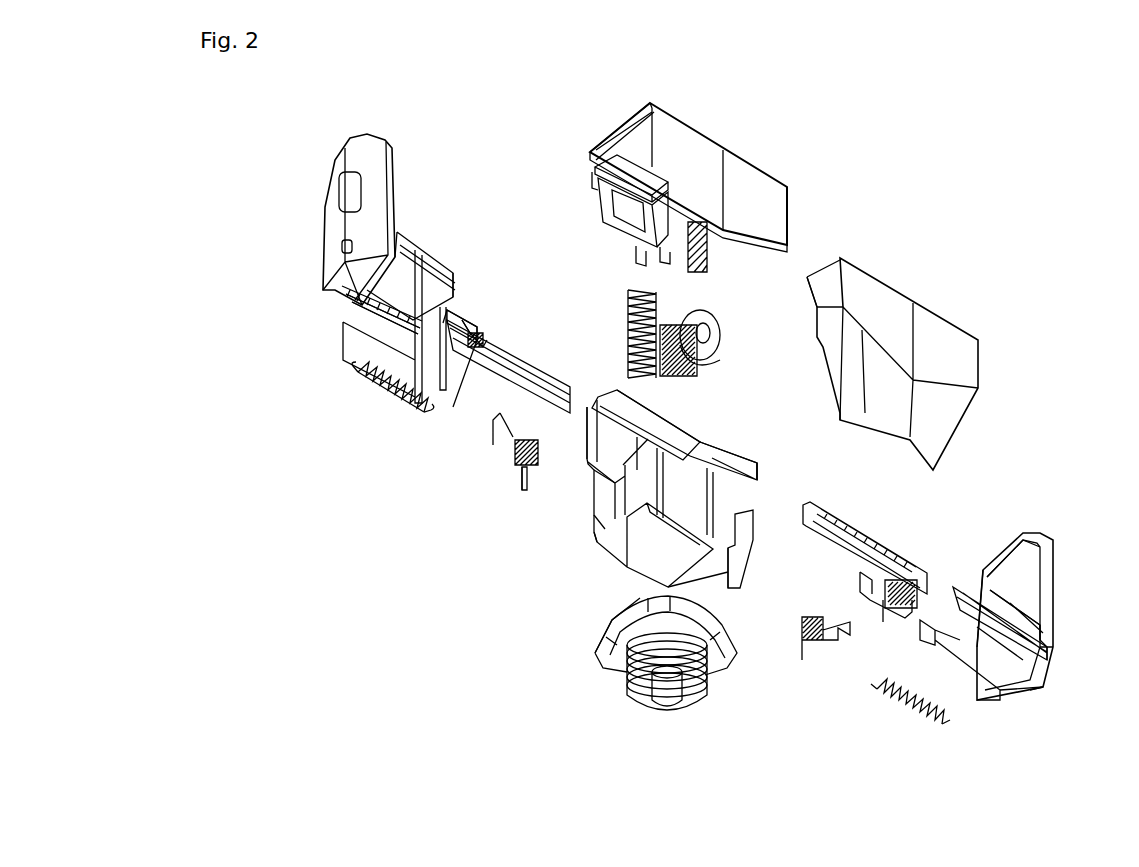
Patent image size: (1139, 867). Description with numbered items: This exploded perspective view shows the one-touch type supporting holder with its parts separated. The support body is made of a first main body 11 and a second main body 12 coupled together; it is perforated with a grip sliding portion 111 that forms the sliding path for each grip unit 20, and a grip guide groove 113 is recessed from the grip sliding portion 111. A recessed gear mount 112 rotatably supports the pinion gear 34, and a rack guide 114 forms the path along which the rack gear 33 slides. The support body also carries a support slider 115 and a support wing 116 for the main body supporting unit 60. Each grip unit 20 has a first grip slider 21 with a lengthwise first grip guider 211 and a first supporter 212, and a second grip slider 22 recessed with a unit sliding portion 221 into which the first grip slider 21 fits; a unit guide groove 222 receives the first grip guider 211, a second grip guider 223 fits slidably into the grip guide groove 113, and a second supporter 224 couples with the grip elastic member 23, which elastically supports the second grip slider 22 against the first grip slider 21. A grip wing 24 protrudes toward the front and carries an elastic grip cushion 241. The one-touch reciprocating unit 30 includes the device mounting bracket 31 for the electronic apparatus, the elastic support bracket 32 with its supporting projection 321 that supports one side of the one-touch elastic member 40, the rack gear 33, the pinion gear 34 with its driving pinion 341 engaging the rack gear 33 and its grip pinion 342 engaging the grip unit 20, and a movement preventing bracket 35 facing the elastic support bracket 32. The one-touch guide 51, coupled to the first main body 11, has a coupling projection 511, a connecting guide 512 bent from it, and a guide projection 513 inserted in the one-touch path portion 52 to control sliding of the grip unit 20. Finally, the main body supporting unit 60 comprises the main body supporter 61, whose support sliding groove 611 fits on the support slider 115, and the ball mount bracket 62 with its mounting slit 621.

The first main body 11 is at (580, 534).
The grip sliding portion 111 is at (715, 470).
The gear mount 112 is at (748, 470).
The grip guide groove 113 is at (808, 275).
The rack guide 114 is at (683, 432).
The support slider 115 is at (612, 556).
The support wing 116 is at (640, 540).
The second main body 12 is at (932, 292).
The grip unit 20 is at (391, 392).
The first grip slider 21 is at (527, 357).
The first grip guider 211 is at (487, 300).
The first supporter 212 is at (510, 333).
The second grip slider 22 is at (405, 242).
The unit sliding portion 221 is at (387, 300).
The unit guide groove 222 is at (407, 317).
The second grip guider 223 is at (443, 257).
The second supporter 224 is at (1045, 640).
The grip elastic member 23 is at (365, 376).
The grip wing 24 is at (320, 212).
The grip cushion 241 is at (1020, 560).
The one-touch reciprocating unit 30 is at (700, 124).
The device mounting bracket 31 is at (608, 130).
The elastic support bracket 32 is at (600, 210).
The supporting projection 321 is at (636, 252).
The rack gear 33 is at (595, 168).
The pinion gear 34 is at (725, 317).
The driving pinion 341 is at (680, 318).
The grip pinion 342 is at (722, 350).
The movement preventing bracket 35 is at (755, 188).
The one-touch elastic member 40 is at (618, 297).
The one-touch guide 51 is at (595, 558).
The coupling projection 511 is at (515, 468).
The connecting guide 512 is at (507, 445).
The guide projection 513 is at (497, 420).
The one-touch path portion 52 is at (472, 333).
The main body supporting unit 60 is at (684, 689).
The main body supporter 61 is at (618, 670).
The support sliding groove 611 is at (600, 622).
The ball mount bracket 62 is at (704, 692).
The mounting slit 621 is at (708, 676).